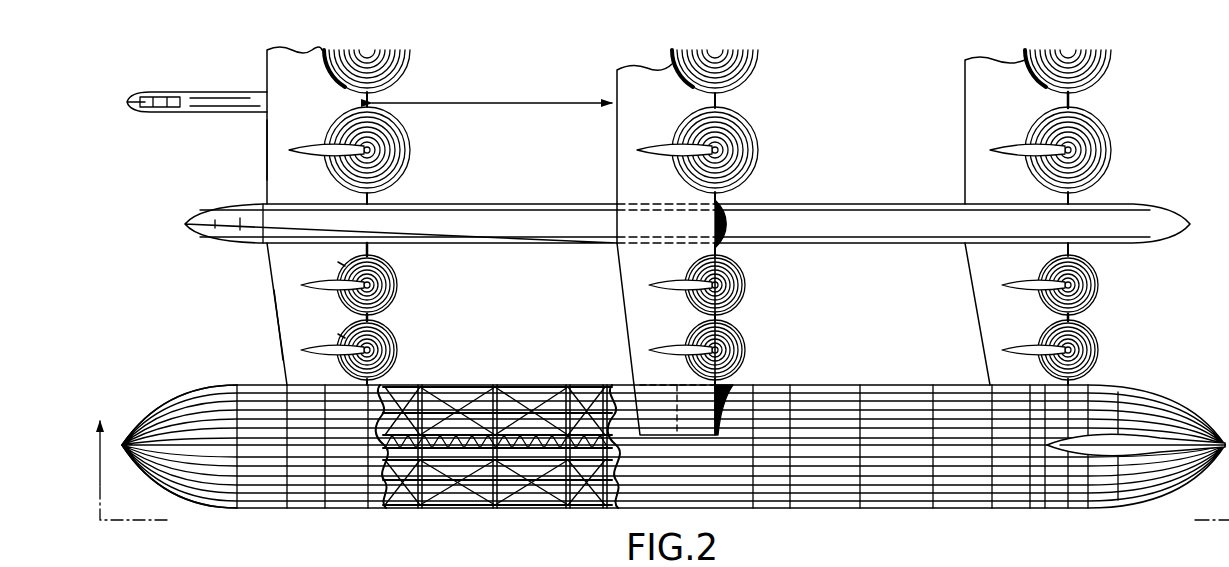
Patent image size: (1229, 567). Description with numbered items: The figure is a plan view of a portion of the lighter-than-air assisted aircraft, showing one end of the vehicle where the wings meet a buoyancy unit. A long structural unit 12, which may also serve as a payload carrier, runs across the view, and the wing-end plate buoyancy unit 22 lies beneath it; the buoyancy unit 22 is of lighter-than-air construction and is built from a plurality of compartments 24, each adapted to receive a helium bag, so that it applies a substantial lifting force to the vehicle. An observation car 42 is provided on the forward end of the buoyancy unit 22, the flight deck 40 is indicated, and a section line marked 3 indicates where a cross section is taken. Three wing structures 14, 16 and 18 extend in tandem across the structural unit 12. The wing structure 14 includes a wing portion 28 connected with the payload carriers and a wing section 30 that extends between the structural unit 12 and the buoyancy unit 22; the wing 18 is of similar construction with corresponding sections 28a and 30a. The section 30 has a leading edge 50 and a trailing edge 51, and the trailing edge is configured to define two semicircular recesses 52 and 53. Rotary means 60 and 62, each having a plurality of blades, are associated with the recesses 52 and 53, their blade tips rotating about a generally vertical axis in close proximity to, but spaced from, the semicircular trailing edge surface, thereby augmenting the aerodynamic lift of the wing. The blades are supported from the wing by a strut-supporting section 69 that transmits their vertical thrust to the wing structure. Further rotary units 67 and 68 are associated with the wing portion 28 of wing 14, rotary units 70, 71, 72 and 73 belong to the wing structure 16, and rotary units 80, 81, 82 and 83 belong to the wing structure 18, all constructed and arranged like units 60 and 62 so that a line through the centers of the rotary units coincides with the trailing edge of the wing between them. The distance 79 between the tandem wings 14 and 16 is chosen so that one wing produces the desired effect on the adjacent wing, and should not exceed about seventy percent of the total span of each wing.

The section line 3- 3 is at (133, 458).
The structural unit 12 is at (1178, 216).
The wing structure 14 is at (265, 130).
The wing structure 16 is at (615, 148).
The wing structure 18 is at (963, 120).
The buoyancy unit 22 is at (565, 513).
The compartment 24 is at (497, 383).
The wing portion 28 is at (278, 148).
The wing section 28a is at (1072, 100).
The wing section 30 is at (372, 317).
The wing section 30a is at (990, 312).
The flight deck 40 is at (90, 102).
The observation car 42 is at (180, 486).
The leading edge 50 is at (276, 313).
The trailing edge 51 is at (370, 250).
The semicircular recess 52 is at (340, 334).
The semicircular recess 53 is at (340, 262).
The rotary means 60 is at (398, 352).
The rotary means 62 is at (398, 282).
The rotary unit 67 is at (383, 56).
The rotary unit 68 is at (412, 150).
The strut-supporting section 69 is at (1010, 352).
The rotary unit 70 is at (746, 349).
The rotary unit 71 is at (746, 284).
The rotary unit 72 is at (760, 150).
The rotary unit 73 is at (730, 56).
The distance 79 is at (481, 103).
The rotary unit 80 is at (1100, 350).
The rotary unit 81 is at (1100, 284).
The rotary unit 82 is at (1112, 153).
The rotary unit 83 is at (1088, 56).